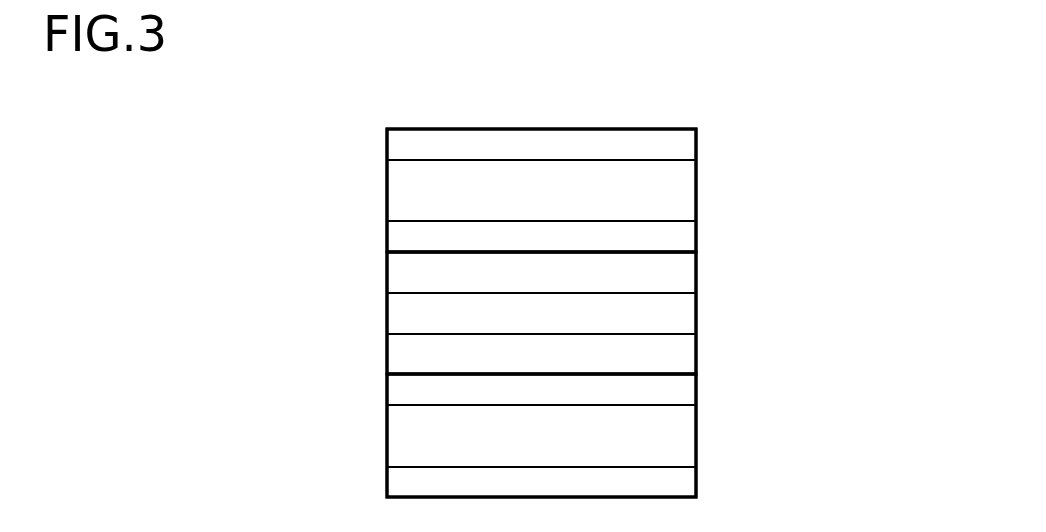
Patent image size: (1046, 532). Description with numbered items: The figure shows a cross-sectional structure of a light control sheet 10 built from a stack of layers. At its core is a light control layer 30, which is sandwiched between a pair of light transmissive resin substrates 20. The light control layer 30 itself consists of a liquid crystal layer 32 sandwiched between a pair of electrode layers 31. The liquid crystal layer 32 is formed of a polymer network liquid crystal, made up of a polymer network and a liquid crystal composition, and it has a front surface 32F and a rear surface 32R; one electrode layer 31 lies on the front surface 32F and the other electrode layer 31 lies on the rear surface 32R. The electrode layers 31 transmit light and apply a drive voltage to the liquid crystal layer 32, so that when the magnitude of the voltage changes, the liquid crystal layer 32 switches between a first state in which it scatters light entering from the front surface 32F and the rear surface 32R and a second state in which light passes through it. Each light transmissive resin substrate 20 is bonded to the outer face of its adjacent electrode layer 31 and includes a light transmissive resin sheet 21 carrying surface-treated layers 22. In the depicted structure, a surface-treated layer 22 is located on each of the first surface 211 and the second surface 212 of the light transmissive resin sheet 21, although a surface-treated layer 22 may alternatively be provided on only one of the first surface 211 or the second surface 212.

The light control sheet 10 is at (696, 104).
The light transmissive resin substrate 20 is at (827, 140).
The light transmissive resin sheet 21 is at (697, 192).
The surface-treated layer 22 is at (697, 151).
The first surface 211 is at (407, 221).
The second surface 212 is at (407, 160).
The light control layer 30 is at (828, 262).
The electrode layer 31 is at (697, 274).
The liquid crystal layer 32 is at (697, 314).
The front surface 32F is at (407, 294).
The rear surface 32R is at (407, 334).